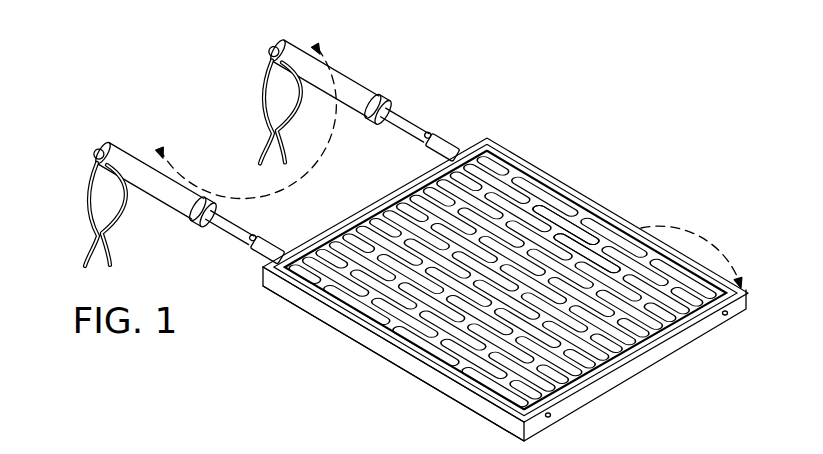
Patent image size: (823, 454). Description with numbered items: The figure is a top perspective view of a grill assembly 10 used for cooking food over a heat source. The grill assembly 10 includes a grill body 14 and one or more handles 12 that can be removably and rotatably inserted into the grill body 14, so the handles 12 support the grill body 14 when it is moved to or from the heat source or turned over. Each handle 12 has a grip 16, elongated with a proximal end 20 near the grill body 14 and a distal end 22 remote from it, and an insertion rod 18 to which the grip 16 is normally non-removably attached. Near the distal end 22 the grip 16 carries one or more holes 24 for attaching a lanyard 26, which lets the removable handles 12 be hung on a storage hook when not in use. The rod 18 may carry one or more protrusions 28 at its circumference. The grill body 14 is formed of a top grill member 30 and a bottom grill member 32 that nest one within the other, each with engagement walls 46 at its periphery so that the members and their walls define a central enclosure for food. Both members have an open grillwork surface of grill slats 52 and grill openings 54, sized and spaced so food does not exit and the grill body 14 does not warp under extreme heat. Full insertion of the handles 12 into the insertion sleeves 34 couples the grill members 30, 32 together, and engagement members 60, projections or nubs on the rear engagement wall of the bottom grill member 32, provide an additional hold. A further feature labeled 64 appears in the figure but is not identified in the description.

The grill assembly 10 is at (510, 241).
The handle 12 is at (257, 167).
The grill body 14 is at (505, 255).
The grip 16 is at (167, 184).
The insertion rod 18 is at (227, 226).
The proximal end 20 is at (199, 228).
The distal end 22 is at (96, 154).
The hole 24 is at (96, 167).
The lanyard 26 is at (88, 210).
The protrusion 28 is at (253, 241).
The top grill member 30 is at (383, 333).
The bottom grill member 32 is at (452, 405).
The insertion sleeve 34 is at (257, 254).
The engagement wall 46 is at (349, 216).
The grill slat 52 is at (565, 225).
The grill opening 54 is at (586, 253).
The engagement member 60 is at (550, 416).
The pivot arrow 64 is at (213, 46).